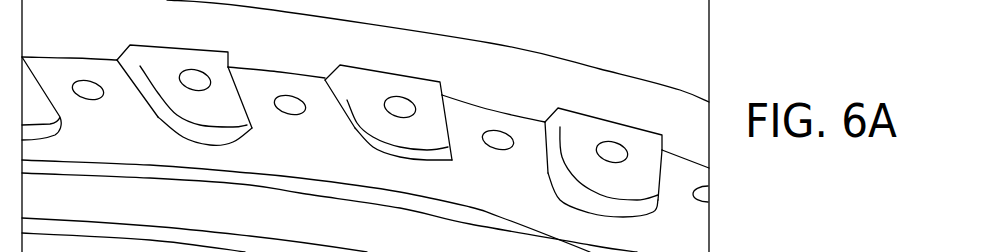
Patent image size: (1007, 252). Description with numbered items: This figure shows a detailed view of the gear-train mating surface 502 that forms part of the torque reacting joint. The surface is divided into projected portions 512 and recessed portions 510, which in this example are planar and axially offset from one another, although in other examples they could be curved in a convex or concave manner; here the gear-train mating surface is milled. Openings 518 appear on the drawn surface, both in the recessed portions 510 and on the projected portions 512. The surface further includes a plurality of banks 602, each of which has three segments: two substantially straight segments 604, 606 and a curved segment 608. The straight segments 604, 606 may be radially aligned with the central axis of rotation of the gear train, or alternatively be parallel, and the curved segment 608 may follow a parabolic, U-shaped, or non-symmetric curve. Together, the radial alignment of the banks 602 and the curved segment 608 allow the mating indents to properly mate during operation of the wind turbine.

The gear-train mating surface 502 is at (282, 165).
The recessed portion 510 is at (73, 72).
The projected portion 512 is at (207, 72).
The aperture 518 is at (88, 90).
The bank 602 is at (140, 70).
The straight segment 604 is at (144, 90).
The straight segment 606 is at (243, 100).
The curved segment 608 is at (212, 134).